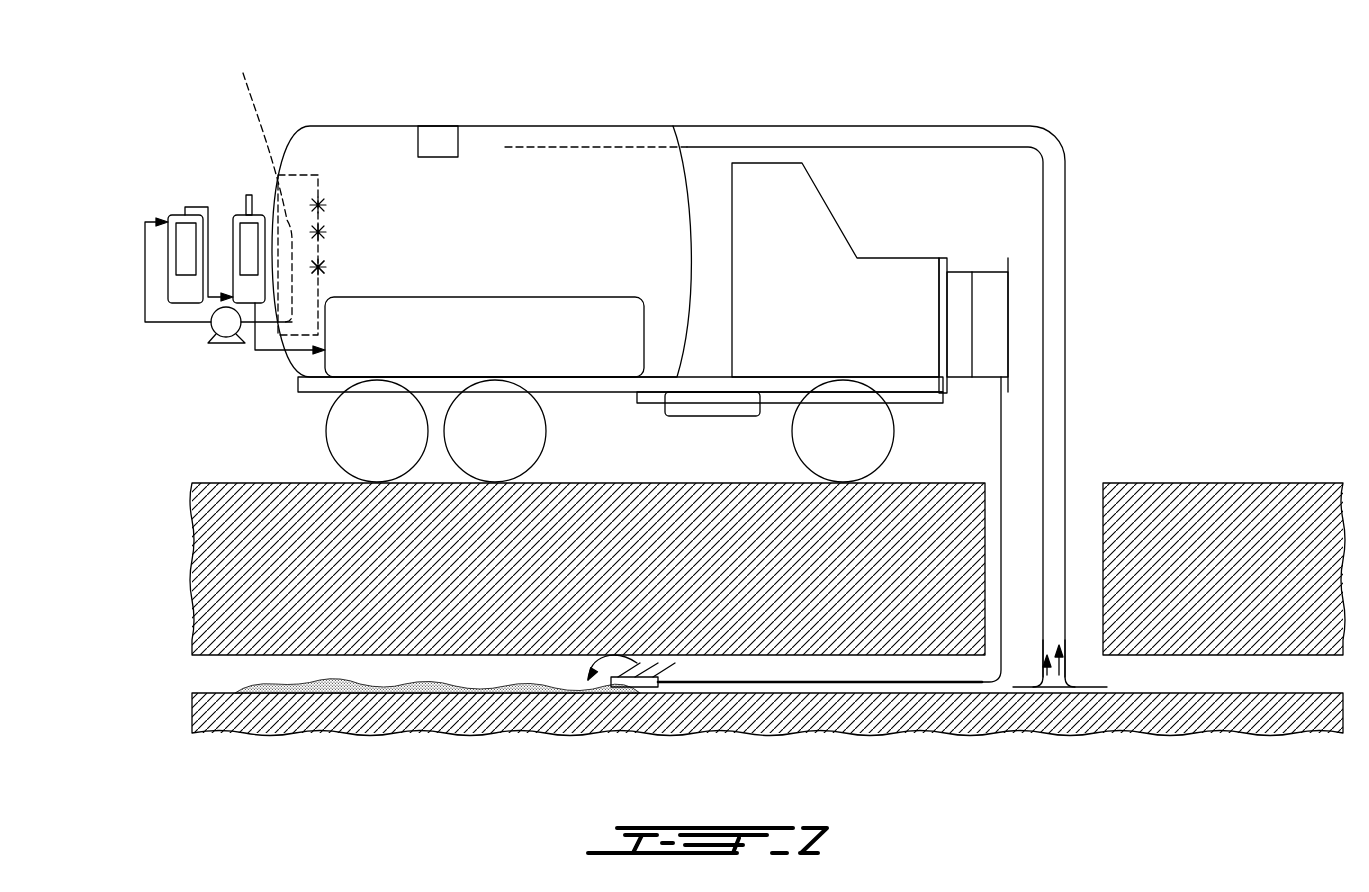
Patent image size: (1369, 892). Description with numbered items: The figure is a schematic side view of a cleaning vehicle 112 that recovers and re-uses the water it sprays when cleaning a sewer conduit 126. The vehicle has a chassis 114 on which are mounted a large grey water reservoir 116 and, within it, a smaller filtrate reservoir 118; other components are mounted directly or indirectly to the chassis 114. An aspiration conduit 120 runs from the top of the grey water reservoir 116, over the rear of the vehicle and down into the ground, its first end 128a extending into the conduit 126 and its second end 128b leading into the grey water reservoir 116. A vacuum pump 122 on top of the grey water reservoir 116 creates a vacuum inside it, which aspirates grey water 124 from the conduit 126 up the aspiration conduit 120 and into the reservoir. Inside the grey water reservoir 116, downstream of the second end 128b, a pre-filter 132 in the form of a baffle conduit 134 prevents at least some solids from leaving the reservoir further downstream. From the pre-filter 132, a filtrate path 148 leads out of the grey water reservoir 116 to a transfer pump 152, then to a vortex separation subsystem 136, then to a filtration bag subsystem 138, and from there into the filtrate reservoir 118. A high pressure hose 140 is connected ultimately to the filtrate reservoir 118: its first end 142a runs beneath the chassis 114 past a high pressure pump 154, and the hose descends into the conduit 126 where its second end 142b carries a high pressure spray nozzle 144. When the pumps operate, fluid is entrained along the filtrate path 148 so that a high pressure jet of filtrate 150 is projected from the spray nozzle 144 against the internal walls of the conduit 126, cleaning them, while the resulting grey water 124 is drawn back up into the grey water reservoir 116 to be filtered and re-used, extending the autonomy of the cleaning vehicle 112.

The cleaning vehicle 112 is at (863, 88).
The chassis 114 is at (750, 160).
The grey water reservoir 116 is at (300, 122).
The filtrate reservoir 118 is at (607, 293).
The aspiration conduit 120 is at (1052, 318).
The vacuum pump 122 is at (436, 133).
The grey water 124 is at (1080, 688).
The conduit 126 is at (1218, 672).
The first end of aspiration conduit 128a is at (1050, 635).
The second end of aspiration conduit 128b is at (522, 140).
The pre-filter 132 is at (338, 216).
The baffle conduit 134 is at (327, 268).
The vortex separation subsystem 136 is at (170, 202).
The filtration bag subsystem 138 is at (235, 196).
The high pressure hose 140 is at (1001, 432).
The first end of high pressure hose 142a is at (633, 402).
The second end of high pressure hose 142b is at (705, 683).
The high pressure spray nozzle 144 is at (640, 688).
The filtrate path 148 is at (257, 185).
The high pressure jet of filtrate 150 is at (580, 692).
The transfer pump 152 is at (217, 325).
The high pressure pump 154 is at (720, 408).